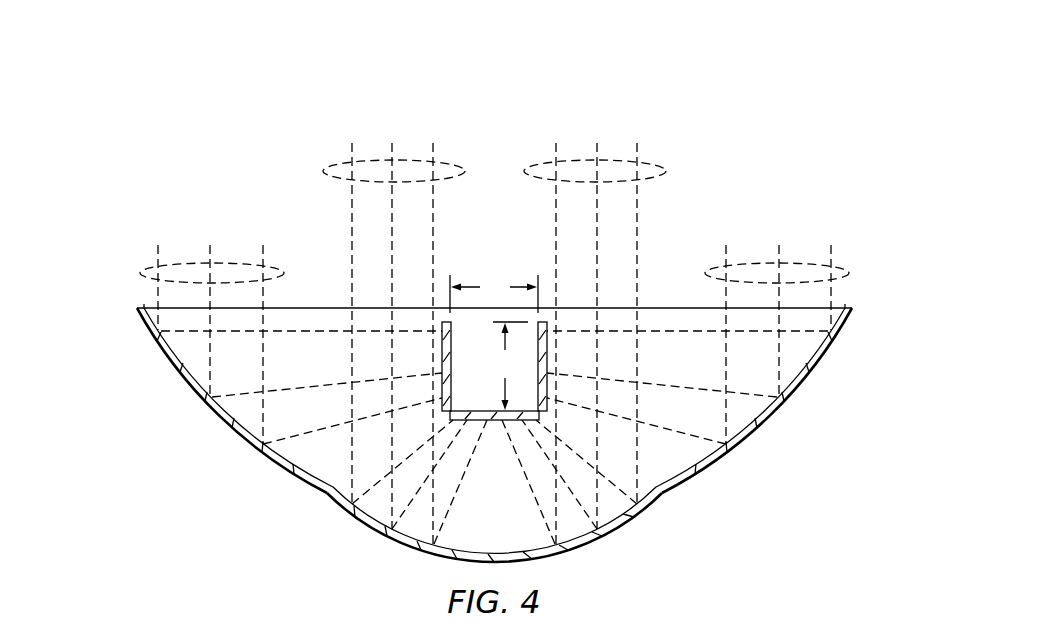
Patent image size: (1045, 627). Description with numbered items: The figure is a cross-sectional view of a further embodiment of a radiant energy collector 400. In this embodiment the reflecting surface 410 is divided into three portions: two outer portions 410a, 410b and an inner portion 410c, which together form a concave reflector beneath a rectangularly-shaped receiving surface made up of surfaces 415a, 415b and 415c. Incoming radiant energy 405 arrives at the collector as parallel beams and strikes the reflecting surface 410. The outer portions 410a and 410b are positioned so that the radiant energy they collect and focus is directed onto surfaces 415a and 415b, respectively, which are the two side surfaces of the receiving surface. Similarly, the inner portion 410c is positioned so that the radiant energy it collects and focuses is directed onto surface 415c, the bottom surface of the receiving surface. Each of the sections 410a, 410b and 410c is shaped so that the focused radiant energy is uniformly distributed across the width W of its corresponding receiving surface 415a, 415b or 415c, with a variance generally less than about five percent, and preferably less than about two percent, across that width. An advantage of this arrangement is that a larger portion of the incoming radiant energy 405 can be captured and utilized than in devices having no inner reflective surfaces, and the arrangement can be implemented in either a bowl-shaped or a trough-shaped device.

The radiant energy collector 400 is at (620, 96).
The incoming radiant energy 405 is at (323, 171).
The reflecting surface 410 is at (469, 437).
The outer portion 410a is at (757, 435).
The outer portion 410b is at (232, 433).
The inner portion 410c is at (633, 522).
The receiving surface section 415a is at (547, 335).
The receiving surface section 415b is at (442, 335).
The receiving surface section 415c is at (495, 422).